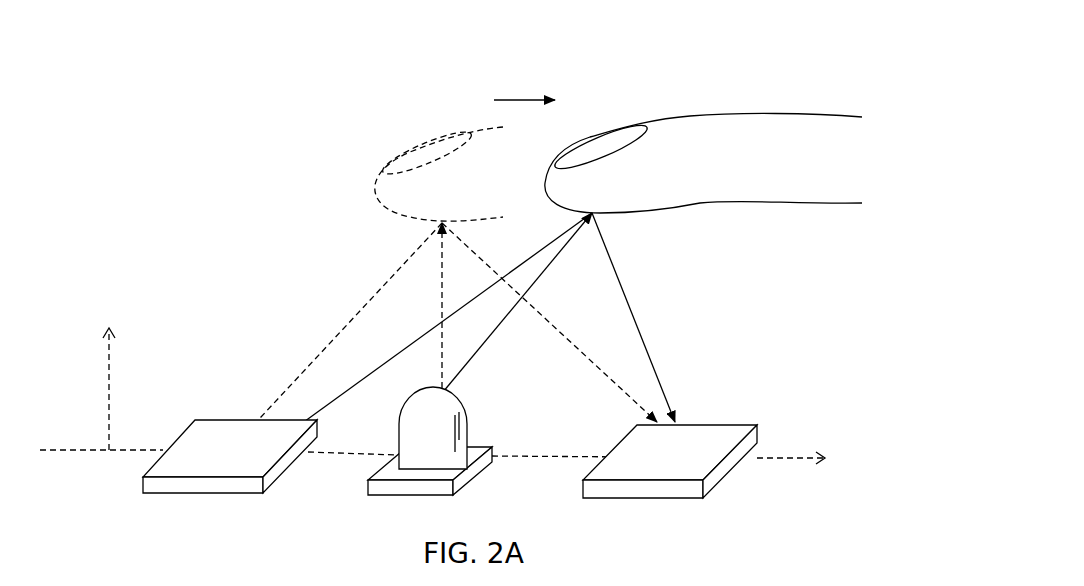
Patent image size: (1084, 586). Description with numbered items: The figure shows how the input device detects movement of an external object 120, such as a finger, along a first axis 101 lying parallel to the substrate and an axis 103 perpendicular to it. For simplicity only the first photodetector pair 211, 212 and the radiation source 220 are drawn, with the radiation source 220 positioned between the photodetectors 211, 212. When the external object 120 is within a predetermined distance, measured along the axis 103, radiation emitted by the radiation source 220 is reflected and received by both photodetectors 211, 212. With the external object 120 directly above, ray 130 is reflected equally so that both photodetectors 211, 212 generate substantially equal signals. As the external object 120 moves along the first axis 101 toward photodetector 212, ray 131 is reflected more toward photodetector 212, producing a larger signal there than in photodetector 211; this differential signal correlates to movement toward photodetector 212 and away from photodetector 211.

The first axis 101 is at (790, 459).
The axis 103 is at (108, 378).
The external object 120 is at (709, 118).
The ray 130 is at (442, 297).
The ray 131 is at (535, 287).
The photodetector 211 is at (242, 462).
The photodetector 212 is at (682, 468).
The radiation source 220 is at (413, 428).